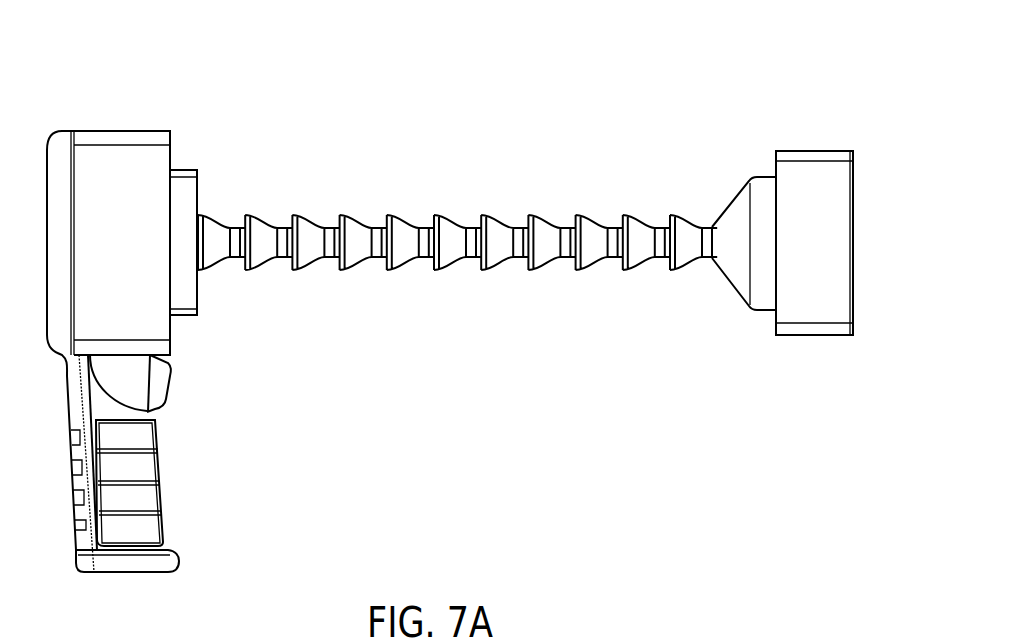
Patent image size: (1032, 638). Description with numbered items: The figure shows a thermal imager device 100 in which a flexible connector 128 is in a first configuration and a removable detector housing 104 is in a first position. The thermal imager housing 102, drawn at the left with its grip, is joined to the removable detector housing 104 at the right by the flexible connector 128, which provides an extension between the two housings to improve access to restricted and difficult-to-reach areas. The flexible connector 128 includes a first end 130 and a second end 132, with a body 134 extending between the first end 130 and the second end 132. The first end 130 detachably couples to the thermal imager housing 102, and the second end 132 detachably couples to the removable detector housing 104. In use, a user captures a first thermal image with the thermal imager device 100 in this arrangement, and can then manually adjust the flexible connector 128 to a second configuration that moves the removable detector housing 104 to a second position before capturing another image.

The thermal imager device 100 is at (116, 486).
The thermal imager housing 102 is at (113, 131).
The removable detector housing 104 is at (820, 150).
The flexible connector 128 is at (424, 120).
The first end 130 is at (183, 170).
The second end 132 is at (765, 178).
The body 134 is at (433, 215).